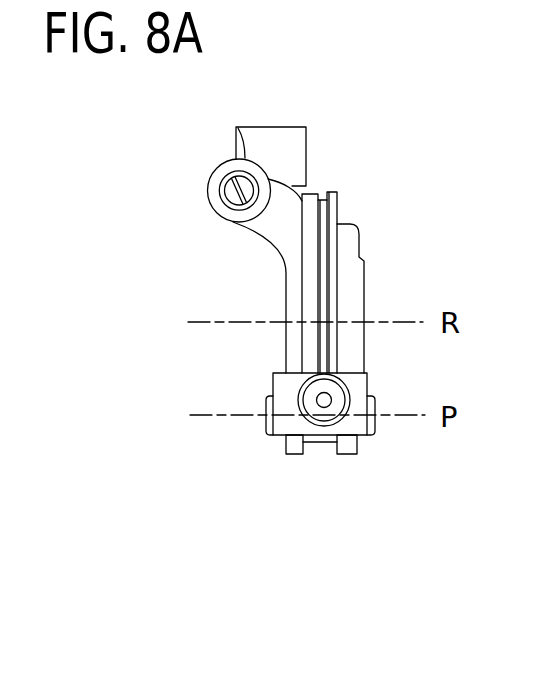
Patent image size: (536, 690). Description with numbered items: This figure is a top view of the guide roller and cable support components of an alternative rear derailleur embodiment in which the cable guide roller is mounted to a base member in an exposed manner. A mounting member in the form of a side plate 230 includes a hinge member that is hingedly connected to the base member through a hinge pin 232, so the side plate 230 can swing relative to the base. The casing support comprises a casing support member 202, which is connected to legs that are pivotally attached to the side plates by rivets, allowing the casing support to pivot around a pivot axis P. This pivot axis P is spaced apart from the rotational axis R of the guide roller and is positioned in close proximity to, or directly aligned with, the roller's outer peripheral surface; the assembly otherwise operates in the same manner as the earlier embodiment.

The hinge pin 232 is at (207, 196).
The side plate 230 is at (293, 246).
The casing support member 202 is at (285, 423).